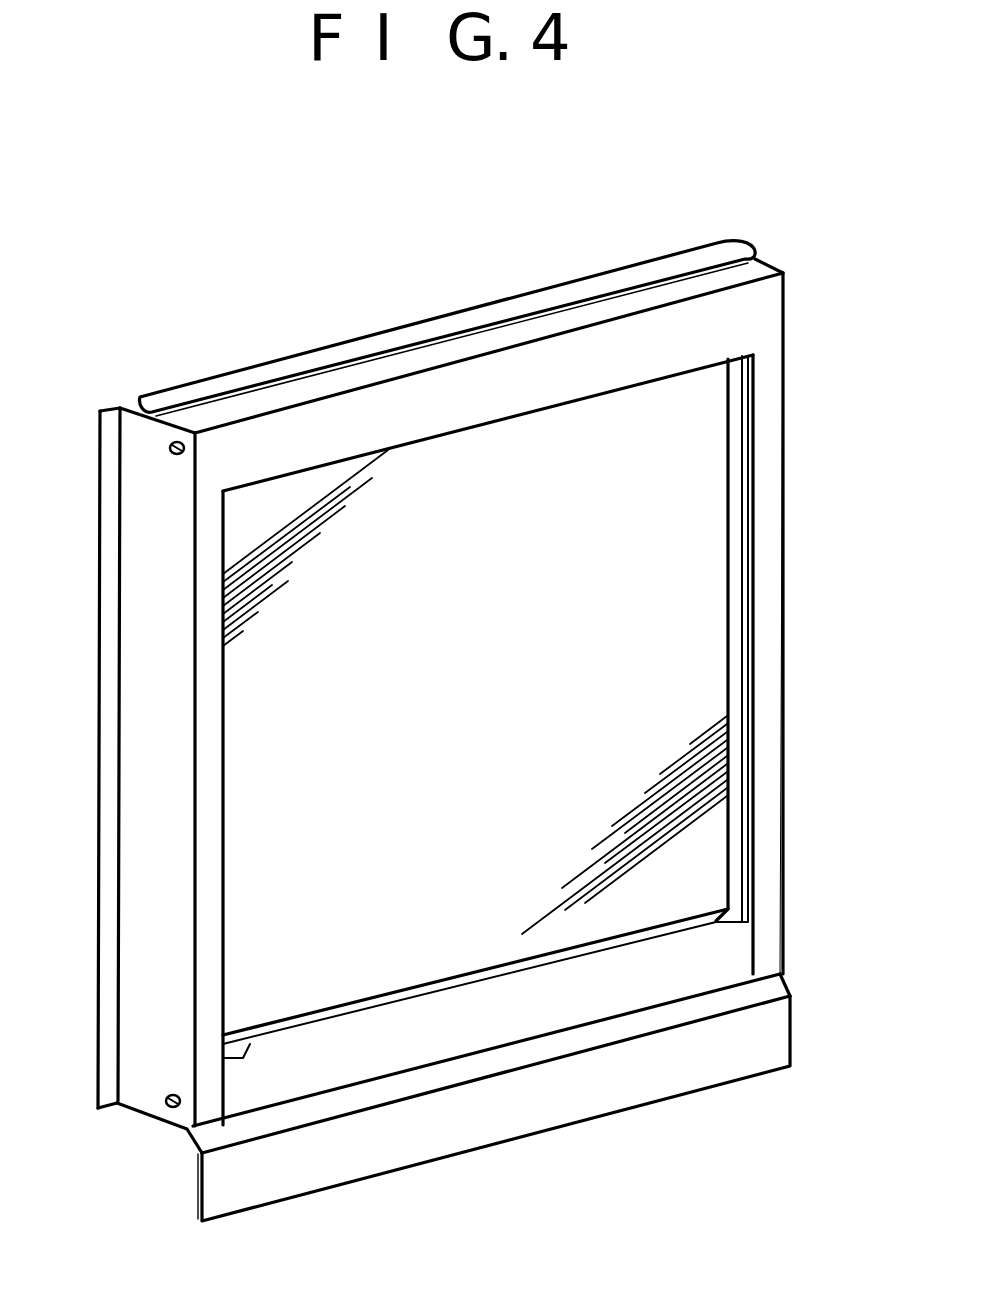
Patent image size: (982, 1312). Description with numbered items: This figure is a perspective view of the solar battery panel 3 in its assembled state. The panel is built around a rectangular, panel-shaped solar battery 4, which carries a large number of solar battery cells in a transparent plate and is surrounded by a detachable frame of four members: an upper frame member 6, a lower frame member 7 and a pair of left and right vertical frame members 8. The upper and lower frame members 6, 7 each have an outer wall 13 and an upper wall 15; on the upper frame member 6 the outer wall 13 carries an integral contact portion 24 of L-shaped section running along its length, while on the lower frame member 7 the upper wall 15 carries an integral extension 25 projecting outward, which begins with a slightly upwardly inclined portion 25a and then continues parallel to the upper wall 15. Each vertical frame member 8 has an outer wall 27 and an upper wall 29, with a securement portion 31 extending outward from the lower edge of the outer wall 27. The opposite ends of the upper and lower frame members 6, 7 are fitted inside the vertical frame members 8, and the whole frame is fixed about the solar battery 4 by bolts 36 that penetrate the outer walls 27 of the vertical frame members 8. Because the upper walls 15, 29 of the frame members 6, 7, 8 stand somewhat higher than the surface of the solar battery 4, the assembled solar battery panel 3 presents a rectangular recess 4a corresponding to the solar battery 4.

The solar battery panel 3 is at (440, 718).
The solar battery 4 is at (536, 706).
The rectangular recess 4a is at (665, 640).
The upper frame member 6 is at (461, 313).
The lower frame member 7 is at (491, 1100).
The vertical frame member 8 is at (90, 702).
The outer wall 13 is at (615, 298).
The upper wall 15 is at (518, 397).
The contact portion 24 is at (355, 350).
The extension 25 is at (432, 1150).
The inclined portion 25a is at (485, 1068).
The outer wall 27 is at (172, 800).
The upper wall 29 is at (222, 722).
The securement portion 31 is at (110, 572).
The bolt 36 is at (176, 455).